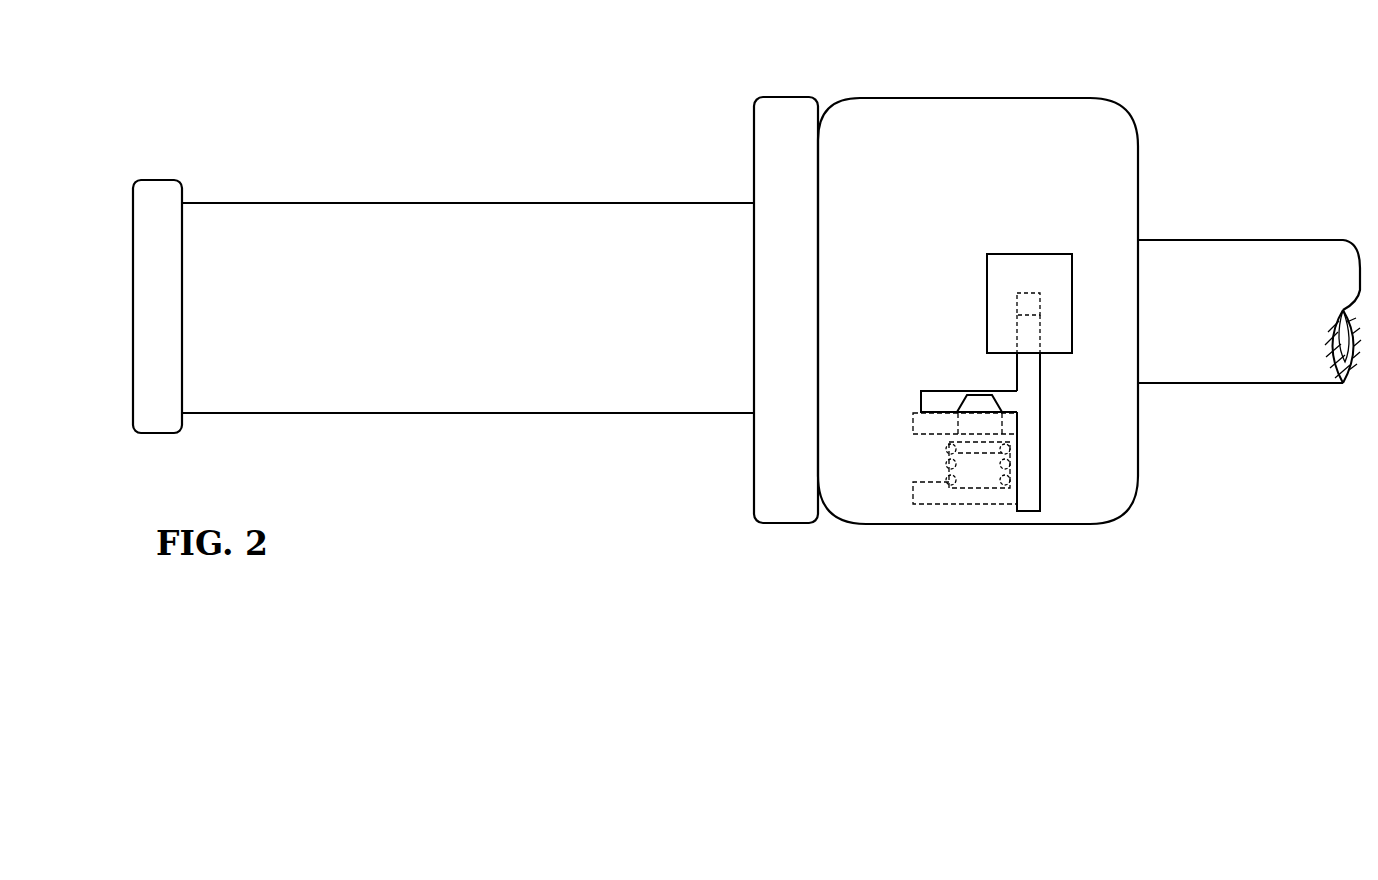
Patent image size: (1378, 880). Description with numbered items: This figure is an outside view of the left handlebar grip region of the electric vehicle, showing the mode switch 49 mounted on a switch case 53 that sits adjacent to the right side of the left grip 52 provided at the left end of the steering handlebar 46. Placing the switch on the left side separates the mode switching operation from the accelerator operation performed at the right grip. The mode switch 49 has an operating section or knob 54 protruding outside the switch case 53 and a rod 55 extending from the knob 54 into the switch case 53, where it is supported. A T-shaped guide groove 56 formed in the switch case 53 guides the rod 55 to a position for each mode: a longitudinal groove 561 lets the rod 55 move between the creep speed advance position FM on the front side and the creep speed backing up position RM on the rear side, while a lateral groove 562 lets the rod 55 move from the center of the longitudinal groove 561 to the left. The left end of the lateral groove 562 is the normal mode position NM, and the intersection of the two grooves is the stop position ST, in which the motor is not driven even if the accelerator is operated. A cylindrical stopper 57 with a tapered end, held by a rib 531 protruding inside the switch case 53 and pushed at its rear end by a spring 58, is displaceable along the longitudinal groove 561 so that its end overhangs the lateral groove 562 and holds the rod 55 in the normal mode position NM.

The steering handlebar 46 is at (1208, 256).
The mode switch 49 is at (1106, 94).
The left grip 52 is at (590, 205).
The switch case 53 is at (937, 112).
The rib 531 is at (913, 424).
The operating section (knob) 54 is at (1053, 265).
The rod 55 is at (1038, 325).
The guide groove 56 is at (1044, 438).
The longitudinal groove 561 is at (1017, 368).
The lateral groove 562 is at (950, 388).
The stopper 57 is at (965, 421).
The spring 58 is at (945, 465).
The creep speed advance mode position FM is at (1028, 303).
The normal mode position NM is at (932, 400).
The stop position ST is at (1028, 402).
The creep speed backing up mode position RM is at (1028, 498).